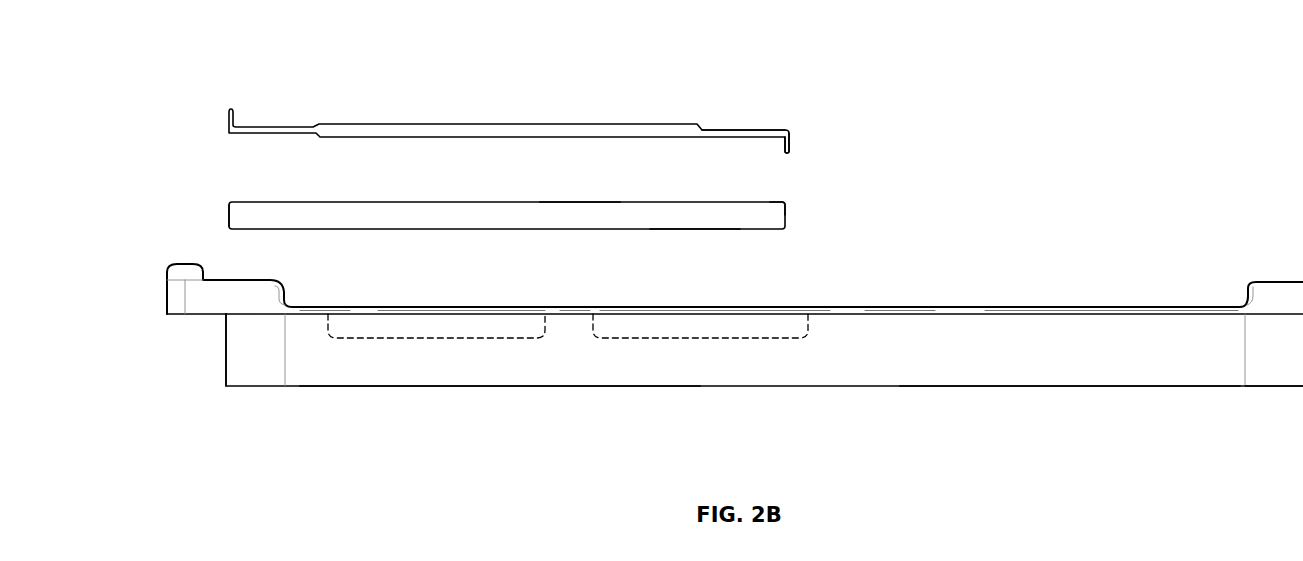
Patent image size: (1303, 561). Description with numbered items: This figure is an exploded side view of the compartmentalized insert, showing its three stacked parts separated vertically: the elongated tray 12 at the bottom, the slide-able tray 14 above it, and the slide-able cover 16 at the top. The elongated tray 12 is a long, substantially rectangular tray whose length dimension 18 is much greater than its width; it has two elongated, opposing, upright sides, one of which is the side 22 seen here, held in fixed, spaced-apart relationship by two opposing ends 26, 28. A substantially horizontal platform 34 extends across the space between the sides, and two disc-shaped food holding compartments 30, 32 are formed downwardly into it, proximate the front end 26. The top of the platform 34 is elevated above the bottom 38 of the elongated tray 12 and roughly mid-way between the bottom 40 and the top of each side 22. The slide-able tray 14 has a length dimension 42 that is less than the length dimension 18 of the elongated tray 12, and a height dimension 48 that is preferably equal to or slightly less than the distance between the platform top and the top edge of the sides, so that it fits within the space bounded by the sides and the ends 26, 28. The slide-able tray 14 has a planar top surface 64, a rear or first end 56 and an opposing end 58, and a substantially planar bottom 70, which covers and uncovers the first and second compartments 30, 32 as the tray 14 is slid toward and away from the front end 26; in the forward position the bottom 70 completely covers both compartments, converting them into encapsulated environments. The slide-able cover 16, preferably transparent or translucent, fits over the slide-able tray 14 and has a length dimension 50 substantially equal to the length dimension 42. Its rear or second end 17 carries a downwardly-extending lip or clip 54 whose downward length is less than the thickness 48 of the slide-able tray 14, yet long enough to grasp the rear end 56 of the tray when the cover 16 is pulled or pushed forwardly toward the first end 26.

The elongated tray 12 is at (800, 362).
The slide-able tray 14 is at (772, 216).
The slide-able cover 16 is at (768, 129).
The second end of the slide-able cover 17 is at (820, 121).
The length dimension 18 is at (168, 314).
The side 22 is at (1070, 372).
The end 26 is at (226, 392).
The end 28 is at (1255, 386).
The food holding compartment 30 is at (368, 338).
The food holding compartment 32 is at (643, 338).
The platform 34 is at (1007, 306).
The bottom of the elongated tray 38 is at (573, 305).
The bottom of the side 40 is at (496, 385).
The length dimension 42 is at (229, 163).
The height dimension 48 is at (229, 229).
The length dimension 50 is at (789, 127).
The clip 54 is at (793, 148).
The first end of the slide-able tray 56 is at (786, 208).
The end of the slide-able tray 58 is at (229, 212).
The planar top surface 64 is at (577, 200).
The bottom 70 is at (696, 234).